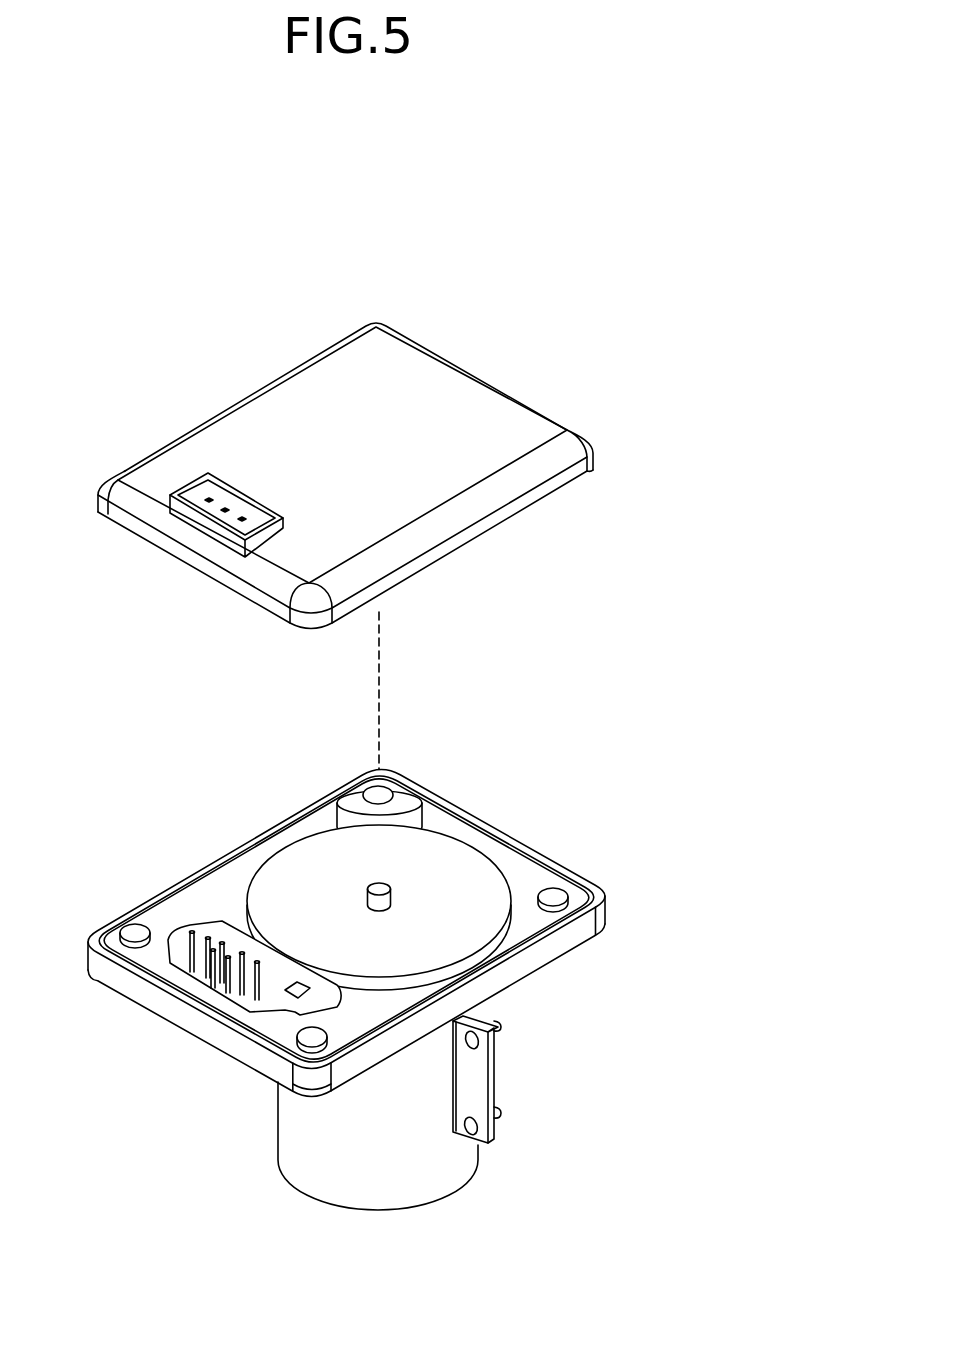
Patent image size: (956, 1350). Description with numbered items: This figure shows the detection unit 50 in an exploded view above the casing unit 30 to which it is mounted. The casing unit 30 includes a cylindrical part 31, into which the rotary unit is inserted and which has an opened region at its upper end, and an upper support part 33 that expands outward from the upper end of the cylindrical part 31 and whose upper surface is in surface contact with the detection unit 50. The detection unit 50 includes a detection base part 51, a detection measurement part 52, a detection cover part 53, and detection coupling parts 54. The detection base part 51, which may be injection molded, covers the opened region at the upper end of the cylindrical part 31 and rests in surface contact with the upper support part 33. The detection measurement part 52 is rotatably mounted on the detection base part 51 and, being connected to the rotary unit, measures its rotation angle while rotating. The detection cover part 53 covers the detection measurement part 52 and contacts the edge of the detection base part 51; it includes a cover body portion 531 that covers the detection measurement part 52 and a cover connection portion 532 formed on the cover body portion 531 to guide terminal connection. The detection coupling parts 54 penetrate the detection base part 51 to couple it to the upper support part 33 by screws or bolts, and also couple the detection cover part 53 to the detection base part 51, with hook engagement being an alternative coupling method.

The casing unit 30 is at (162, 1140).
The cylindrical part 31 is at (317, 1172).
The upper support part 33 is at (253, 1068).
The detection unit 50 is at (607, 207).
The detection base part 51 is at (587, 927).
The detection measurement part 52 is at (460, 870).
The detection cover part 53 is at (173, 347).
The detection coupling parts 54 is at (135, 928).
The cover body portion 531 is at (173, 437).
The cover connection portion 532 is at (187, 484).